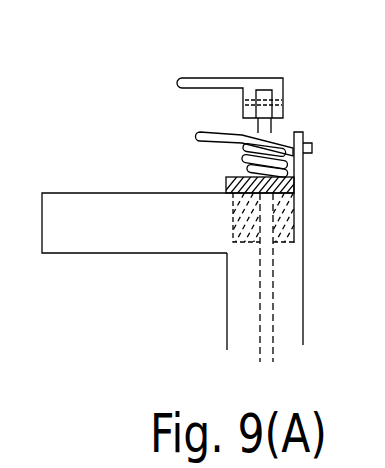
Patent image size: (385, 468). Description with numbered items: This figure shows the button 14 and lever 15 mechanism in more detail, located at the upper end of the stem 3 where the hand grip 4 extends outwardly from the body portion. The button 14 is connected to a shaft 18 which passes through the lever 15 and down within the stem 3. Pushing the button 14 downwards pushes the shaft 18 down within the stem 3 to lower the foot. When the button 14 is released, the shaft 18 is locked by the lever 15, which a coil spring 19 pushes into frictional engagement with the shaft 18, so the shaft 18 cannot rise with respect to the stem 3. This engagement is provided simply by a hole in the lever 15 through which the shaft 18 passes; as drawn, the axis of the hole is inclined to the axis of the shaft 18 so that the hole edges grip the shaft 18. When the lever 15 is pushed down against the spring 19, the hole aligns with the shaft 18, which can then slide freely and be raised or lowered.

The stem 3 is at (238, 333).
The hand grip 4 is at (108, 243).
The button 14 is at (250, 82).
The lever 15 is at (200, 136).
The shaft 18 is at (270, 322).
The coil spring 19 is at (243, 159).